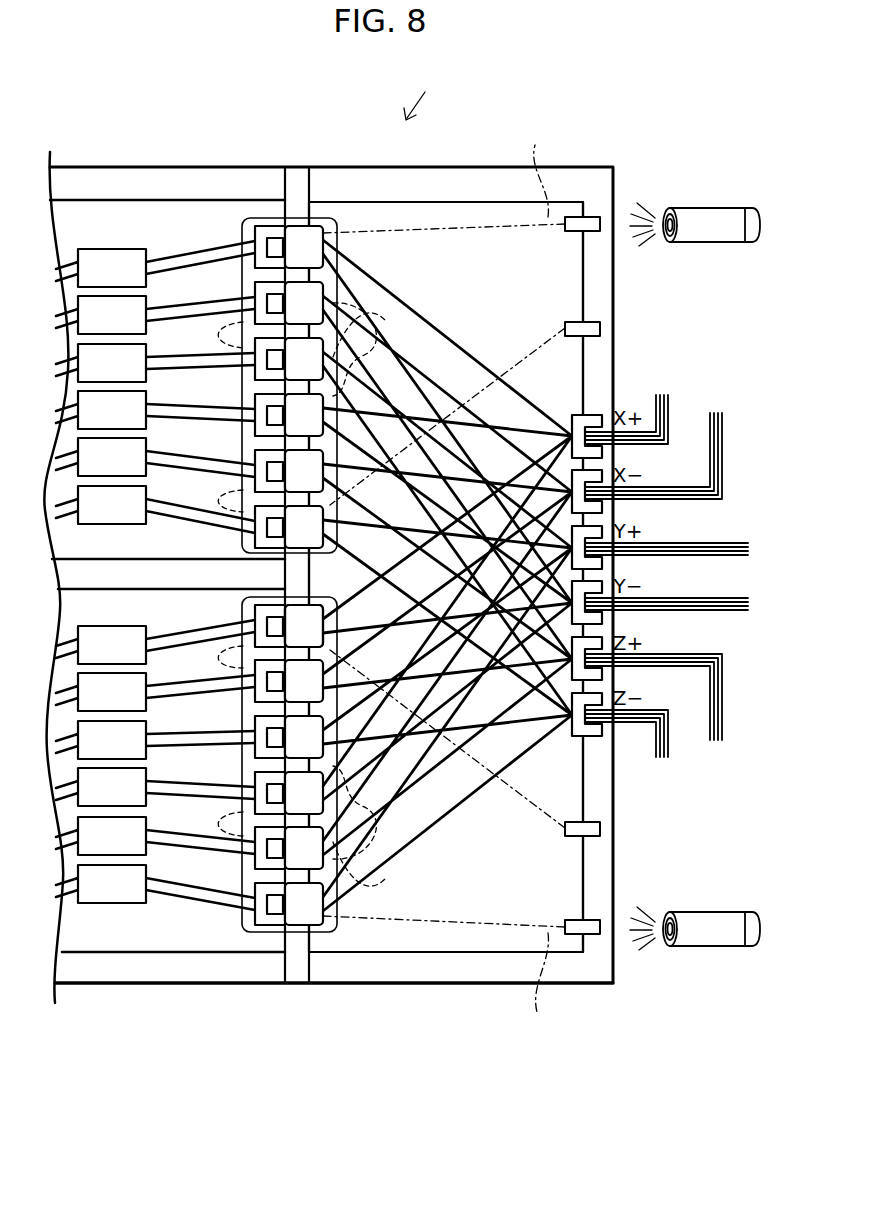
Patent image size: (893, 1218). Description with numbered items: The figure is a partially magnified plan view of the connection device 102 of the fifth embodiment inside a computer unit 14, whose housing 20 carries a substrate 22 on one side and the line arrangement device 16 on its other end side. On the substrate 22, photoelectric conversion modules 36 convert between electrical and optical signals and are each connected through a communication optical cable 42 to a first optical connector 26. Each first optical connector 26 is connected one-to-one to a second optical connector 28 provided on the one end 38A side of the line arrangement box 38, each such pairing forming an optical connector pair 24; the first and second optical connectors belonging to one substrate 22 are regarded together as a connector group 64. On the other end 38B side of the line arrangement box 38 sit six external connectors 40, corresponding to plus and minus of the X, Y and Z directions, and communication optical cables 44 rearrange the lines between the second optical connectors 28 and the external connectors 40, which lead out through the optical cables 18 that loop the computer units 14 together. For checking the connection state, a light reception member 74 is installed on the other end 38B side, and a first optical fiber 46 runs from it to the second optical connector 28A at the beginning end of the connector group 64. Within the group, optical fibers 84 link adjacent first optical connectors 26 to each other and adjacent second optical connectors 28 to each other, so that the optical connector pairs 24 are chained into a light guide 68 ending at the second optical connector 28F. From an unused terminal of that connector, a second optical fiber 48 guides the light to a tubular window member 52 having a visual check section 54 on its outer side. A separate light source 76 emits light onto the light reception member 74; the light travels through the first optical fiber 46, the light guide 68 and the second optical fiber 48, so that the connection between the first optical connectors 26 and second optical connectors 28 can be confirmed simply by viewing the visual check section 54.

The computer unit 14 is at (85, 1002).
The line arrangement device 16 is at (446, 992).
The optical cable 18 is at (714, 420).
The housing 20 is at (140, 993).
The substrate 22 is at (83, 188).
The optical connector pair 24 is at (240, 97).
The first optical connector 26 is at (262, 226).
The second optical connector 28 is at (300, 226).
The second optical connector 28A is at (297, 575).
The second optical connector 28F is at (294, 597).
The photoelectric conversion module 36 is at (92, 249).
The line arrangement box 38 is at (490, 963).
The one end 38A is at (330, 960).
The other end 38B is at (586, 882).
The external connector 40 is at (600, 415).
The communication optical cable 42 is at (200, 250).
The communication optical cable 44 is at (552, 420).
The first optical fiber 46 is at (533, 582).
The second optical fiber 48 is at (545, 345).
The window member 52 is at (590, 322).
The visual check section 54 is at (601, 330).
The connector group 64 is at (344, 208).
The light guide 68 is at (376, 305).
The light reception member 74 is at (590, 217).
The light source 76 is at (705, 243).
The optical fiber 84 is at (218, 336).
The connection device 102 is at (428, 91).